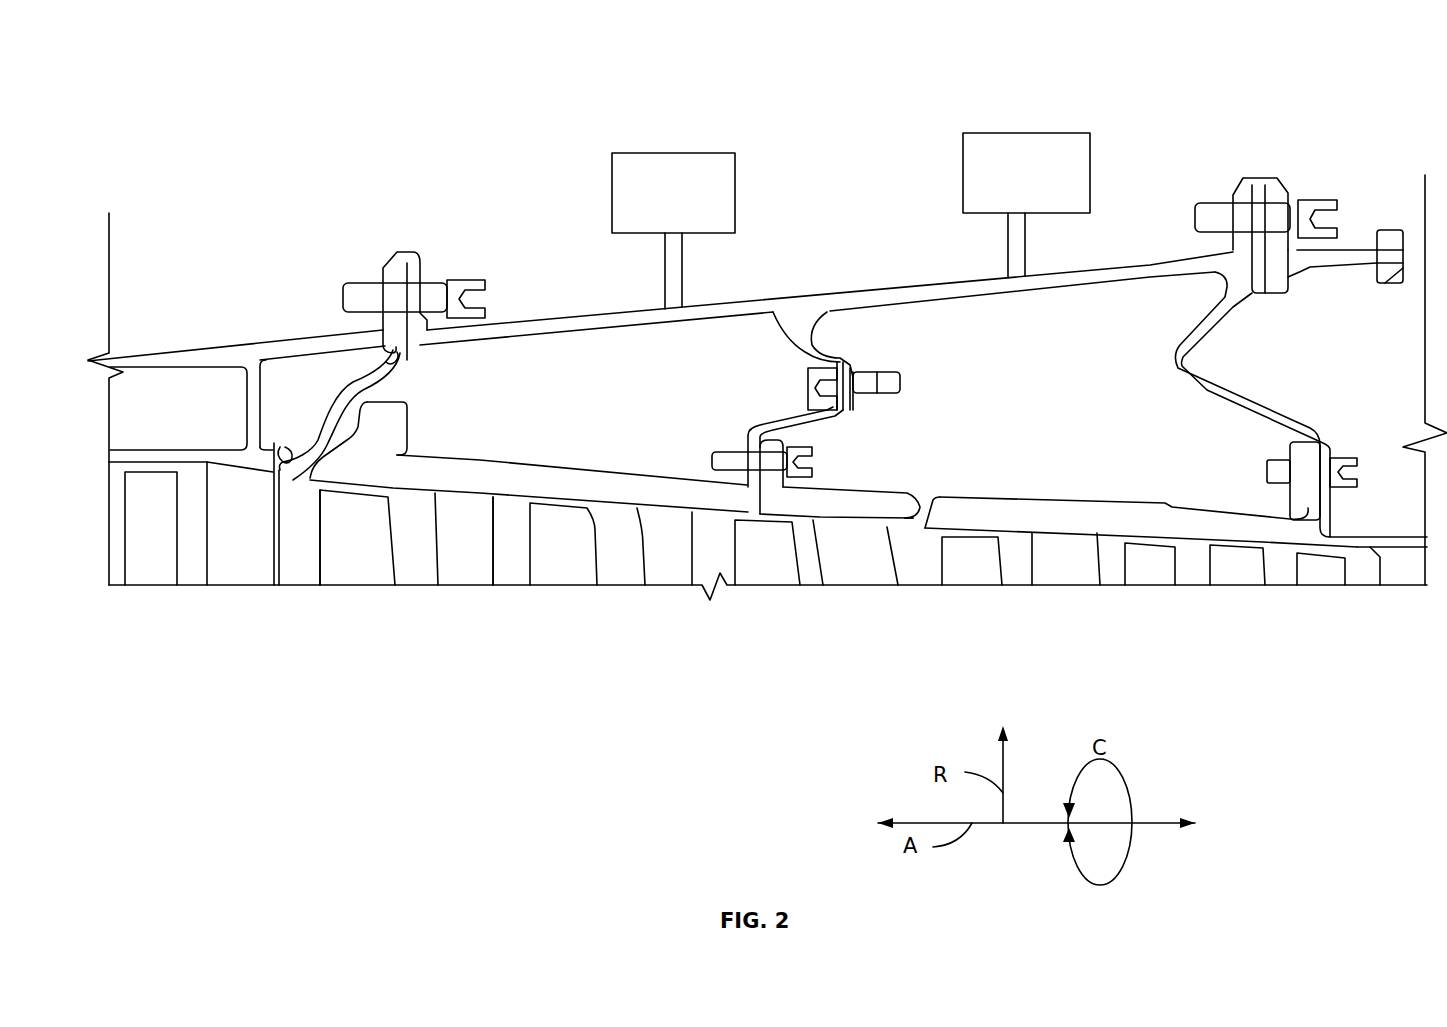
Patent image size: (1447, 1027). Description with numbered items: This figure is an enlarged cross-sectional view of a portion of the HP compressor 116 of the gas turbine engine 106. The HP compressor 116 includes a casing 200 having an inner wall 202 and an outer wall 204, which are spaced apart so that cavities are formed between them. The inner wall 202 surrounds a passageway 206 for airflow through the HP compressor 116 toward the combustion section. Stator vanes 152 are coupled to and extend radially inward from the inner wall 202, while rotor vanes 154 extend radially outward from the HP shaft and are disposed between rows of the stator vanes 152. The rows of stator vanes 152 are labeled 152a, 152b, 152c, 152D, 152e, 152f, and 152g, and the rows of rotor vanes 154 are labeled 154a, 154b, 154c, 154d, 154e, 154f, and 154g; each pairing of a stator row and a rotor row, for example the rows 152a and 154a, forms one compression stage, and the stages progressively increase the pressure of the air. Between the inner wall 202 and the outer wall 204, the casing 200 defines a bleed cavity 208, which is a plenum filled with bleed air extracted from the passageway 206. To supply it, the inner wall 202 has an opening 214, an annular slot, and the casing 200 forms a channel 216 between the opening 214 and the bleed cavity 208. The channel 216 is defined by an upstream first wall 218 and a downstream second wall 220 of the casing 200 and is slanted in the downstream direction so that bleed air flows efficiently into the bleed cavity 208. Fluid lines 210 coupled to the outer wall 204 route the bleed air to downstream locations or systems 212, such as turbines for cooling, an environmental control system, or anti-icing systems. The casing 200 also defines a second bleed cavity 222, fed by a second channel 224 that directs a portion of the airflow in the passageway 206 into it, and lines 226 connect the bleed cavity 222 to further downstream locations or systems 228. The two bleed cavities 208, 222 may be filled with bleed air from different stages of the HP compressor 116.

The gas turbine engine 106 is at (310, 85).
The HP compressor 116 is at (500, 172).
The casing 200 is at (875, 237).
The inner wall 202 is at (620, 487).
The outer wall 204 is at (757, 310).
The passageway 206 is at (289, 575).
The bleed cavity 208 is at (629, 384).
The fluid lines 210 is at (662, 276).
The downstream locations and/or systems 212 is at (696, 204).
The opening 214 is at (292, 483).
The channel 216 is at (370, 385).
The first wall 218 is at (327, 402).
The second wall 220 is at (353, 433).
The bleed cavity 222 is at (1039, 366).
The channel 224 is at (918, 500).
The lines 226 is at (1006, 255).
The downstream locations and/or systems 228 is at (1046, 184).
The stator vanes 152 is at (483, 573).
The row of stator vanes 152a is at (232, 563).
The row of stator vanes 152b is at (462, 563).
The row of stator vanes 152c is at (667, 568).
The row of stator vanes 152D is at (860, 560).
The row of stator vanes 152e is at (1072, 560).
The row of stator vanes 152f is at (1248, 568).
The row of stator vanes 152g is at (1415, 572).
The rotor vanes 154 is at (382, 565).
The row of rotor vanes 154a is at (153, 568).
The row of rotor vanes 154b is at (357, 567).
The row of rotor vanes 154c is at (568, 572).
The row of rotor vanes 154d is at (772, 578).
The row of rotor vanes 154e is at (975, 572).
The row of rotor vanes 154f is at (1160, 578).
The row of rotor vanes 154g is at (1327, 572).